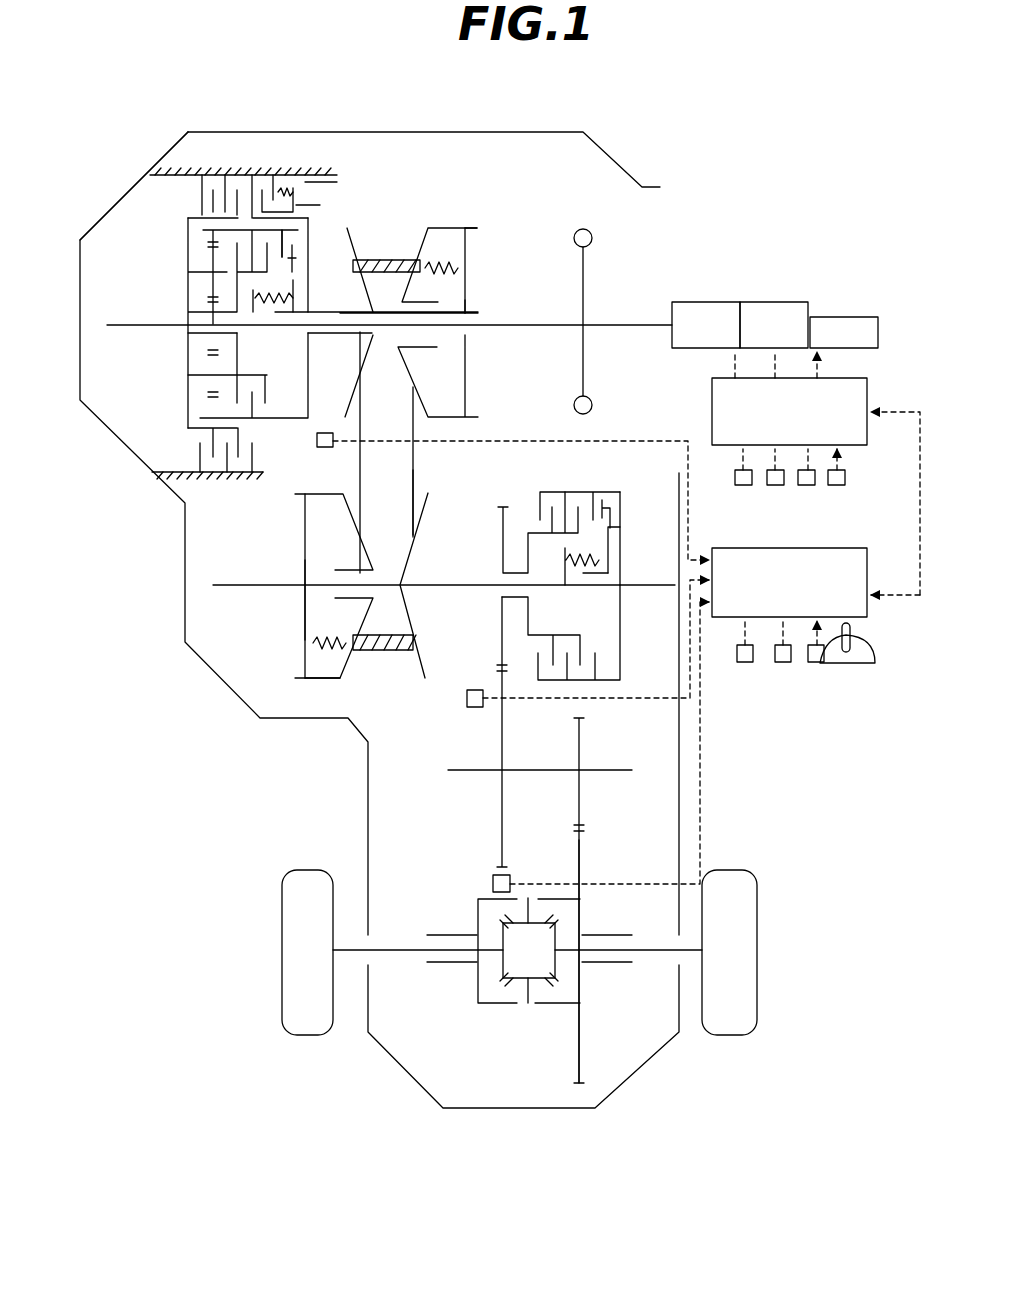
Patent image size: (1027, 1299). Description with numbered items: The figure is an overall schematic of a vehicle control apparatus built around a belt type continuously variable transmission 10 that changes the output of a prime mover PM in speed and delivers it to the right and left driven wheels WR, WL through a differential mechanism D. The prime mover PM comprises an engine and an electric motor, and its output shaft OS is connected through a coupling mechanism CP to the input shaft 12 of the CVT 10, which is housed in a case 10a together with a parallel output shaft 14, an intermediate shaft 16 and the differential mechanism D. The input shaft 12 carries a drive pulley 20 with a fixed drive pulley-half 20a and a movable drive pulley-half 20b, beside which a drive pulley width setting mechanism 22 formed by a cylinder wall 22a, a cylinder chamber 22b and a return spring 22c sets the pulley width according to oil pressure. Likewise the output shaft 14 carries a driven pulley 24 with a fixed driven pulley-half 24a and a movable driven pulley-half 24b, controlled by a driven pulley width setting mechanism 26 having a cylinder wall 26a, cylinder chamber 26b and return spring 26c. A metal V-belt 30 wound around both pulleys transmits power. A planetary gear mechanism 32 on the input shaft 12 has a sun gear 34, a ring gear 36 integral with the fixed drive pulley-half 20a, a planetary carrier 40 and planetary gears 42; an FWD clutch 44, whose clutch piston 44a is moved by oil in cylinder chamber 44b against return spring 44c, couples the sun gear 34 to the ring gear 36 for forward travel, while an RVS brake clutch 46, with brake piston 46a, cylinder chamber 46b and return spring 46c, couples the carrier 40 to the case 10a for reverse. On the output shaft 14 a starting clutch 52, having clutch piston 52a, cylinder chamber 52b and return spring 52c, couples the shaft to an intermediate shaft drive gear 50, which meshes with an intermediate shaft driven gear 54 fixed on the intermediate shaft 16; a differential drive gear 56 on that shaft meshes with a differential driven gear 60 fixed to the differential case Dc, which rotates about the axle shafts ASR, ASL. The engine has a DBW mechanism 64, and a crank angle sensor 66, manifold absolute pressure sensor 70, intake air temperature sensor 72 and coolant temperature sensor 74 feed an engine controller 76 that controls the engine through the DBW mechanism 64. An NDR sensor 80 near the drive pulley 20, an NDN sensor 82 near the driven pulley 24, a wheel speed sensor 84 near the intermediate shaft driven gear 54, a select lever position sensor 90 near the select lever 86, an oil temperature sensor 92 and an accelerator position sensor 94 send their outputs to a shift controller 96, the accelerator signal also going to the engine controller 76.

The belt type continuously variable transmission 10 is at (653, 160).
The case 10a is at (107, 215).
The input shaft 12 is at (505, 328).
The output shaft 14 is at (437, 584).
The intermediate shaft 16 is at (543, 769).
The drive pulley 20 is at (487, 178).
The fixed drive pulley-half 20a is at (375, 245).
The movable drive pulley-half 20b is at (420, 235).
The drive pulley width setting mechanism 22 is at (500, 226).
The cylinder wall 22a is at (468, 305).
The cylinder chamber 22b is at (460, 268).
The return spring 22c is at (468, 252).
The driven pulley 24 is at (440, 712).
The fixed driven pulley-half 24a is at (416, 670).
The movable driven pulley-half 24b is at (360, 670).
The driven pulley width setting mechanism 26 is at (272, 697).
The cylinder wall 26a is at (304, 612).
The cylinder chamber 26b is at (313, 625).
The return spring 26c is at (313, 660).
The metal V-belt 30 is at (358, 462).
The planetary gear mechanism 32 is at (175, 230).
The sun gear 34 is at (205, 343).
The ring gear 36 is at (205, 238).
The planetary carrier 40 is at (188, 410).
The planetary gears 42 is at (205, 287).
The FWD clutch 44 is at (318, 237).
The clutch piston 44a is at (295, 285).
The cylinder chamber 44b is at (298, 260).
The return spring 44c is at (265, 312).
The RVS brake clutch 46 is at (250, 165).
The brake piston 46a is at (318, 200).
The cylinder chamber 46b is at (305, 183).
The return spring 46c is at (275, 185).
The intermediate shaft drive gear 50 is at (495, 530).
The starting clutch 52 is at (542, 488).
The clutch piston 52a is at (612, 530).
The cylinder chamber 52b is at (620, 505).
The return spring 52c is at (600, 555).
The intermediate shaft driven gear 54 is at (502, 800).
The differential drive gear 56 is at (580, 800).
The differential driven gear 60 is at (580, 854).
The DBW mechanism 64 is at (845, 317).
The crank angle sensor 66 is at (836, 485).
The manifold absolute pressure sensor 70 is at (806, 485).
The intake air temperature sensor 72 is at (775, 485).
The coolant temperature sensor 74 is at (743, 485).
The engine controller 76 is at (867, 385).
The NDR sensor 80 is at (316, 440).
The NDN sensor 82 is at (474, 690).
The wheel speed sensor 84 is at (493, 884).
The select lever 86 is at (860, 642).
The select lever position sensor 90 is at (815, 662).
The oil temperature sensor 92 is at (783, 662).
The accelerator position sensor 94 is at (745, 662).
The shift controller 96 is at (867, 552).
The prime mover PM is at (772, 292).
The output shaft OS is at (610, 322).
The coupling mechanism CP is at (580, 390).
The differential mechanism D is at (470, 992).
The differential case Dc is at (493, 1003).
The left axle shaft ASL is at (350, 953).
The right axle shaft ASR is at (695, 953).
The left driven wheel WL is at (313, 1035).
The right driven wheel WR is at (737, 1035).